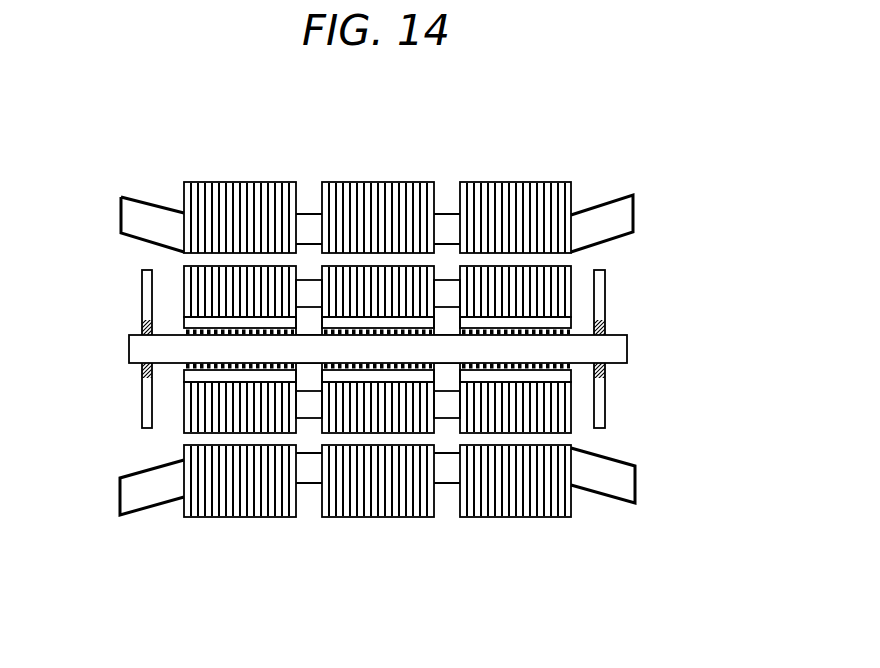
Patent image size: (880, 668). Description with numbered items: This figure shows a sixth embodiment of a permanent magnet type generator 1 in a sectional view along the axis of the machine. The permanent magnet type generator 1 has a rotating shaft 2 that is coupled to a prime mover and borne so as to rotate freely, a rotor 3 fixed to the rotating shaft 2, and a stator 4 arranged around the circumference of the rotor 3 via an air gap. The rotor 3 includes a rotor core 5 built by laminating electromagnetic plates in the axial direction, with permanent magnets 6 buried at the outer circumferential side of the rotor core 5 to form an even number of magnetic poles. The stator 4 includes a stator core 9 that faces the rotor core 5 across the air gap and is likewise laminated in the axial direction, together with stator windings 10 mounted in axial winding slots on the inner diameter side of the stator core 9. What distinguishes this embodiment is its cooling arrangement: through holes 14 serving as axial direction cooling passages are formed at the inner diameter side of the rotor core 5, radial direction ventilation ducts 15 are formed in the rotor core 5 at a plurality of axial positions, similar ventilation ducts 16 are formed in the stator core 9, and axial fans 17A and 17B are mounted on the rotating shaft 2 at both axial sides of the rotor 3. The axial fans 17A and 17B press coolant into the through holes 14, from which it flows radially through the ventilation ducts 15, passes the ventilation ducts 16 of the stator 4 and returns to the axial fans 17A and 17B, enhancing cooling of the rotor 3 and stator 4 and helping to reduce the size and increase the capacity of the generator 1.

The permanent magnet type generator 1 is at (229, 119).
The rotating shaft 2 is at (130, 347).
The rotor 3 is at (447, 290).
The stator 4 is at (448, 197).
The rotor core 5 is at (563, 297).
The permanent magnets 6 is at (447, 297).
The stator core 9 is at (573, 190).
The stator windings 10 is at (654, 223).
The through holes 14 is at (572, 376).
The ventilation ducts 15 is at (313, 292).
The ventilation ducts 16 is at (445, 203).
The axial fan 17A is at (138, 405).
The axial fan 17B is at (603, 415).